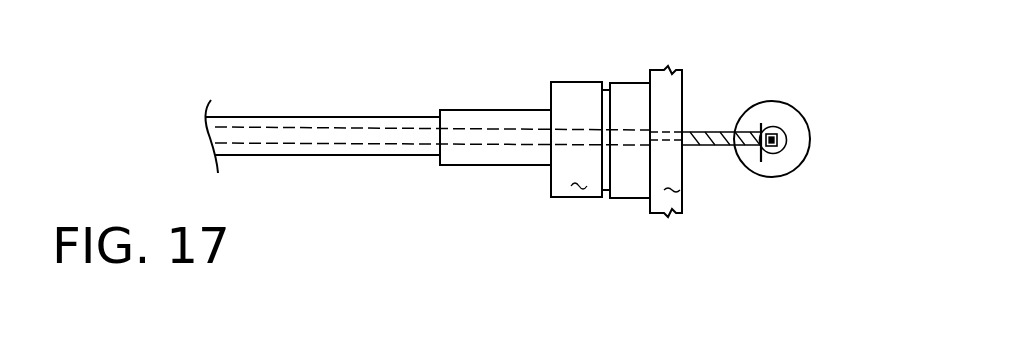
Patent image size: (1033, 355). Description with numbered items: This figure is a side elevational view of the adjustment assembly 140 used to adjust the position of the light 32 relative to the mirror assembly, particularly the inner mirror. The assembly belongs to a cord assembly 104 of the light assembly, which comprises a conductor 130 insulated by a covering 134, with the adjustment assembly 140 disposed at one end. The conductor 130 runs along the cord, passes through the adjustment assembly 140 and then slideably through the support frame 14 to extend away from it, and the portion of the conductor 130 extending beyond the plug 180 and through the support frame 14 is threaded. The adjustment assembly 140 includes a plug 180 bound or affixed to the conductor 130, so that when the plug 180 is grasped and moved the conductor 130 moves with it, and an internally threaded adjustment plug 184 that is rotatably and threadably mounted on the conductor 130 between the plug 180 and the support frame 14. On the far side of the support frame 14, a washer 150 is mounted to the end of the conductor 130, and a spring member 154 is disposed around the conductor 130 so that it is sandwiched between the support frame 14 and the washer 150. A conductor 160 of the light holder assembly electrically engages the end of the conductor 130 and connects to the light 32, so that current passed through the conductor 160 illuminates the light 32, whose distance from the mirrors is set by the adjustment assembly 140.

The cord assembly 104 is at (322, 102).
The conductor 130 is at (268, 133).
The covering 134 is at (228, 116).
The adjustment assembly 140 is at (566, 119).
The plug 180 is at (572, 186).
The adjustment plug 184 is at (651, 113).
The support frame 14 is at (670, 193).
The spring member 154 is at (720, 130).
The light 32 is at (800, 118).
The washer 150 is at (771, 153).
The conductor 160 is at (778, 144).